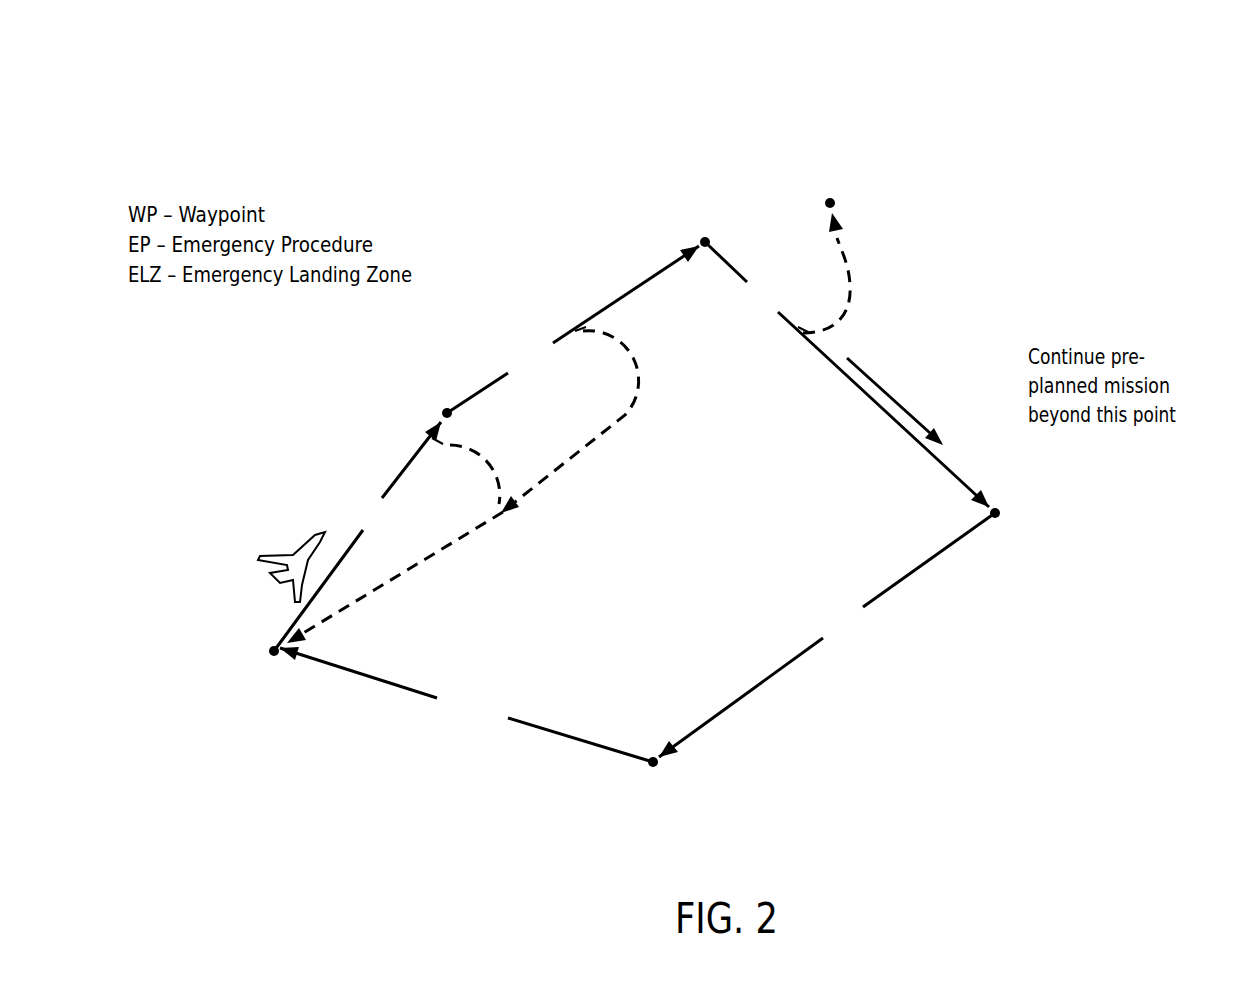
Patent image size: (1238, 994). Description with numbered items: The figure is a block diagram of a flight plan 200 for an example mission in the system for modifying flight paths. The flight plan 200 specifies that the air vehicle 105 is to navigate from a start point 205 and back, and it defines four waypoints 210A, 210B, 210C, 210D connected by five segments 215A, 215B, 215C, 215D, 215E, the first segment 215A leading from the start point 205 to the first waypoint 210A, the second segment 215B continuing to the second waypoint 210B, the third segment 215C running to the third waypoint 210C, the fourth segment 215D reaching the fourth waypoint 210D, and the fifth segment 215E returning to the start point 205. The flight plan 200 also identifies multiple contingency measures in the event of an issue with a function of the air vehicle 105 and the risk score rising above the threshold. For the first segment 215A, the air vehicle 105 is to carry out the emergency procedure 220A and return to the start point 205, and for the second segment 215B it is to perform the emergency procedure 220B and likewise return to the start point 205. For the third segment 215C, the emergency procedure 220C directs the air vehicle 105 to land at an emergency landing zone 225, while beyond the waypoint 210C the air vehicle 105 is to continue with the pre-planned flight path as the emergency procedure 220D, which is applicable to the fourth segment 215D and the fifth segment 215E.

The air vehicle 105 is at (273, 555).
The flight plan 200 is at (797, 77).
The start point 205 is at (231, 664).
The waypoint 210A is at (412, 413).
The waypoint 210B is at (704, 217).
The waypoint 210C is at (1033, 516).
The waypoint 210D is at (655, 799).
The first segment 215A is at (357, 536).
The second segment 215B is at (573, 329).
The third segment 215C is at (847, 374).
The fourth segment 215D is at (827, 635).
The fifth segment 215E is at (466, 704).
The emergency procedure 220A is at (395, 540).
The emergency procedure 220B is at (581, 420).
The emergency procedure 220C is at (855, 273).
The emergency procedure 220D is at (907, 401).
The emergency landing zone 225 is at (830, 172).